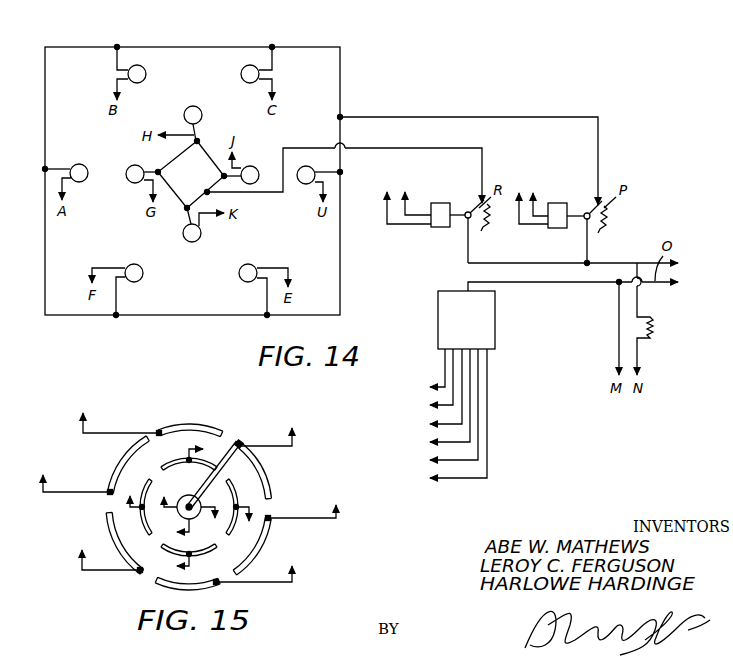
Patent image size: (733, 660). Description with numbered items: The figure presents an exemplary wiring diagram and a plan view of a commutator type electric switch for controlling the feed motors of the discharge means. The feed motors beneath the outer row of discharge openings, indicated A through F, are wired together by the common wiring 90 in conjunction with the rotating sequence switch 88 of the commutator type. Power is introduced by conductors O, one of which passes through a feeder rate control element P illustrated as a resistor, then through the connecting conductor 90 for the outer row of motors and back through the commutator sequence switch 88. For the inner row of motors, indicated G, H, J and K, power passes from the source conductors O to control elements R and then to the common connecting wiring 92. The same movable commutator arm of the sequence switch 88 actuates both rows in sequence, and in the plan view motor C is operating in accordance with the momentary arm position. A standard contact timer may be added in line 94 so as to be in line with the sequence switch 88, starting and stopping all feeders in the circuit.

In FIG. 14, the rotating switch 88 is at (492, 323).
In FIG. 15, the rotating switch 88 is at (272, 478).
In FIG. 14, the common wiring 90 is at (343, 81).
In FIG. 14, the common connecting wiring 92 is at (172, 171).
In FIG. 14, the line 94 is at (592, 283).